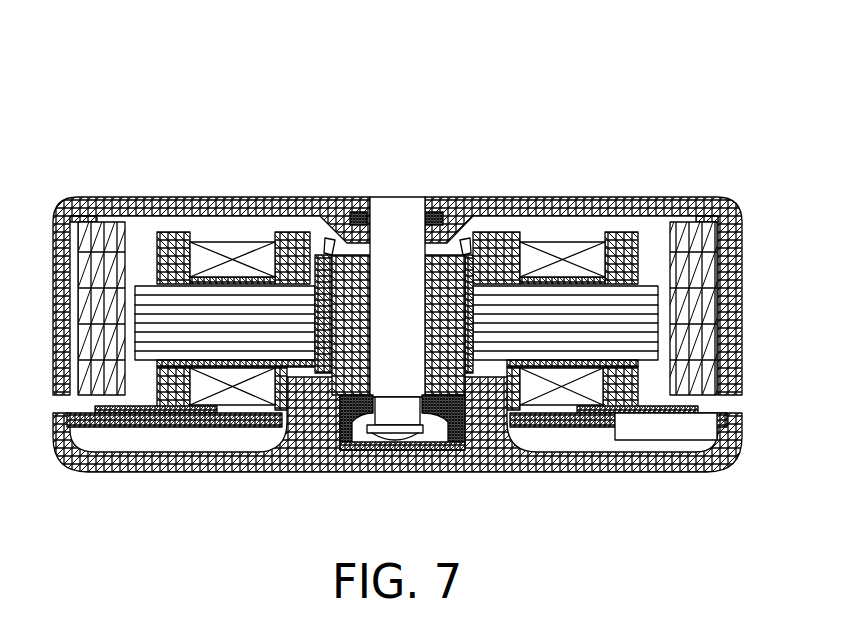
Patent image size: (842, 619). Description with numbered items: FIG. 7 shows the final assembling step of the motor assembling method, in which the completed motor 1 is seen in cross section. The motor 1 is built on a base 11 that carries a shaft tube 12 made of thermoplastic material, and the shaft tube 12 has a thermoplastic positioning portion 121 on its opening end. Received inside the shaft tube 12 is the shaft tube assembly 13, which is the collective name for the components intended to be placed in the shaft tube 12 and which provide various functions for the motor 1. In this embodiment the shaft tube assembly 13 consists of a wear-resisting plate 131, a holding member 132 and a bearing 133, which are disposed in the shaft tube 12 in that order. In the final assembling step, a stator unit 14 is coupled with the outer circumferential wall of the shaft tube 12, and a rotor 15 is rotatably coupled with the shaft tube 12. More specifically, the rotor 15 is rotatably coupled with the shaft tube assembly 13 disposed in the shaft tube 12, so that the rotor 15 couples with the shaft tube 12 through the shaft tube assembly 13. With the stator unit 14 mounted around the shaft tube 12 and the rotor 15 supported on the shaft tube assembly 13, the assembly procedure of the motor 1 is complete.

The motor 1 is at (585, 90).
The base 11 is at (553, 468).
The shaft tube 12 is at (468, 303).
The thermoplastic positioning portion 121 is at (298, 248).
The shaft tube assembly 13 is at (348, 102).
The wear-resisting plate 131 is at (418, 447).
The holding member 132 is at (408, 320).
The bearing 133 is at (450, 277).
The stator unit 14 is at (620, 238).
The rotor 15 is at (665, 198).